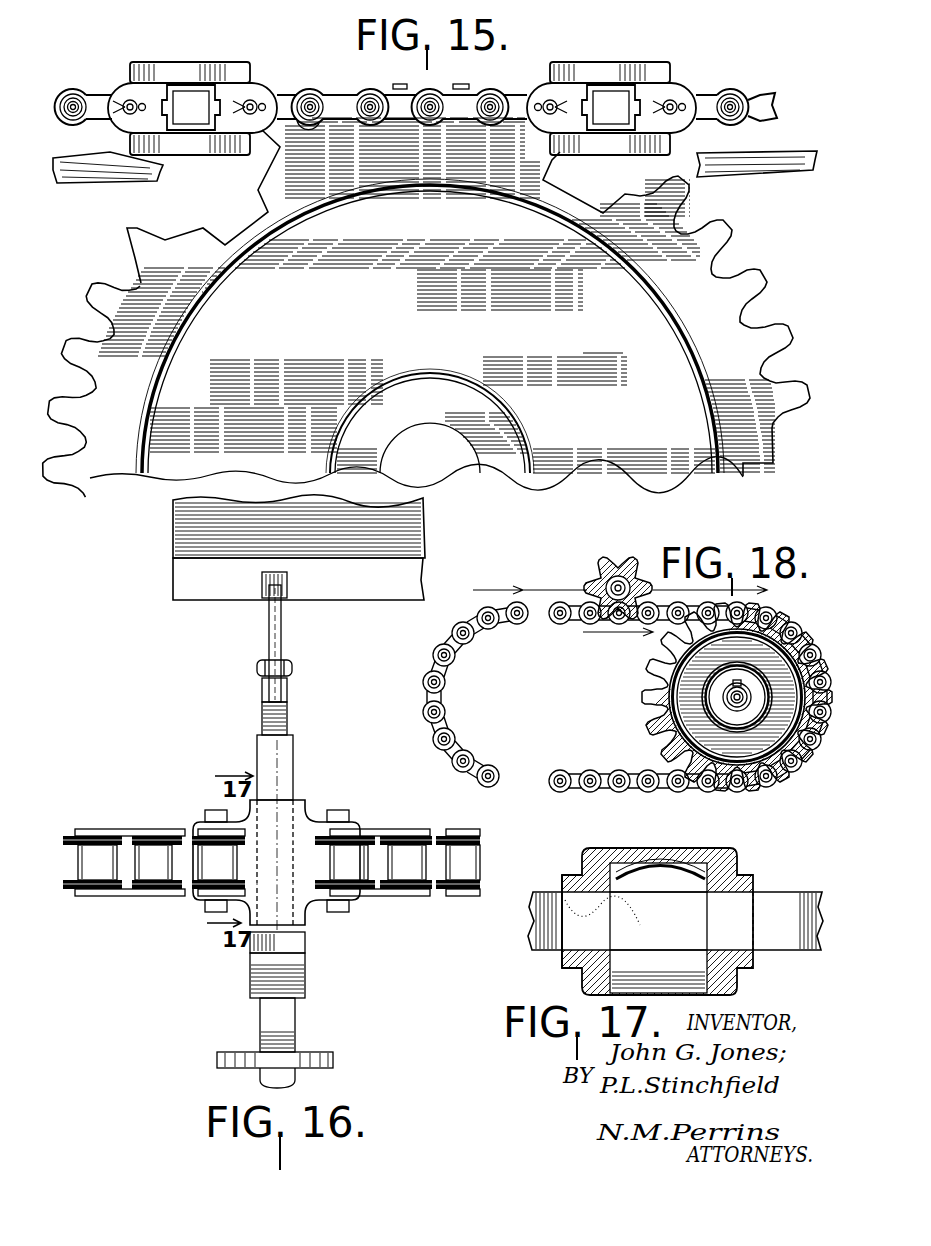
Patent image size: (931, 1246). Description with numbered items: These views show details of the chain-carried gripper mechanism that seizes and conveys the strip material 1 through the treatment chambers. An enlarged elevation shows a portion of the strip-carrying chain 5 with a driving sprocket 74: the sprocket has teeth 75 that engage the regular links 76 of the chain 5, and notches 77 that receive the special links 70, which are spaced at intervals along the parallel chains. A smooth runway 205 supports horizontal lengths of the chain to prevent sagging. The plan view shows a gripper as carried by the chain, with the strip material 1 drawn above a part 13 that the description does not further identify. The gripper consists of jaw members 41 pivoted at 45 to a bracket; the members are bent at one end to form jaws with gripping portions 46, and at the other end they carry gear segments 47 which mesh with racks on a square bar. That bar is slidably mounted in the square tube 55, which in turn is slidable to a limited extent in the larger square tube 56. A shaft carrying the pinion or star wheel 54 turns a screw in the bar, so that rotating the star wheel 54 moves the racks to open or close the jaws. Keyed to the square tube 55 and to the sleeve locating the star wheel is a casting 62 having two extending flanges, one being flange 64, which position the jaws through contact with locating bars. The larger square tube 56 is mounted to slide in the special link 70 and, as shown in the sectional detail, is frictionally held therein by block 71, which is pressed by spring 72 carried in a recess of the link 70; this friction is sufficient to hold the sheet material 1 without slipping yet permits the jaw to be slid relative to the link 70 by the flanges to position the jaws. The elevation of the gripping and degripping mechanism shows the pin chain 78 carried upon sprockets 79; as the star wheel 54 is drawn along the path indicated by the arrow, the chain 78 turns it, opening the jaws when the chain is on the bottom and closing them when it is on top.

In FIG. 15, the chain 5 is at (335, 86).
In FIG. 16, the chain 5 is at (275, 862).
In FIG. 15, the regular links 76 is at (76, 124).
In FIG. 16, the regular links 76 is at (112, 836).
In FIG. 18, the regular links 76 is at (461, 709).
In FIG. 15, the special link 70 is at (190, 150).
In FIG. 16, the special link 70 is at (282, 818).
In FIG. 17, the special link 70 is at (751, 880).
In FIG. 15, the runway 205 is at (88, 178).
In FIG. 15, the notches 77 is at (253, 222).
In FIG. 15, the teeth 75 is at (110, 278).
In FIG. 15, the sprocket 74 is at (456, 335).
In FIG. 16, the strip material 1 is at (177, 543).
In FIG. 16, the bracket 13 is at (203, 583).
In FIG. 16, the gripping portions 46 is at (262, 588).
In FIG. 16, the jaw member 41 is at (281, 623).
In FIG. 16, the pivot 45 is at (258, 667).
In FIG. 16, the gear segment 47 is at (288, 687).
In FIG. 16, the square tube 55 is at (263, 717).
In FIG. 17, the square tube 55 is at (812, 946).
In FIG. 16, the tube 56 is at (278, 765).
In FIG. 17, the tube 56 is at (550, 932).
In FIG. 16, the casting 62 is at (306, 947).
In FIG. 16, the flange 64 is at (298, 962).
In FIG. 16, the star wheel 54 is at (300, 1057).
In FIG. 18, the star wheel 54 is at (605, 581).
In FIG. 18, the pin chain 78 is at (473, 627).
In FIG. 18, the sprockets 79 is at (682, 707).
In FIG. 17, the spring 72 is at (695, 852).
In FIG. 17, the block 71 is at (566, 878).